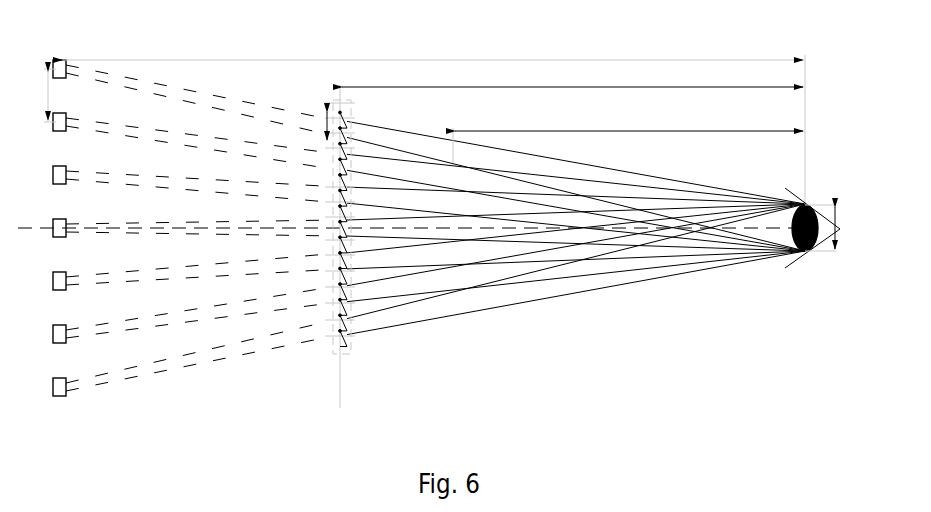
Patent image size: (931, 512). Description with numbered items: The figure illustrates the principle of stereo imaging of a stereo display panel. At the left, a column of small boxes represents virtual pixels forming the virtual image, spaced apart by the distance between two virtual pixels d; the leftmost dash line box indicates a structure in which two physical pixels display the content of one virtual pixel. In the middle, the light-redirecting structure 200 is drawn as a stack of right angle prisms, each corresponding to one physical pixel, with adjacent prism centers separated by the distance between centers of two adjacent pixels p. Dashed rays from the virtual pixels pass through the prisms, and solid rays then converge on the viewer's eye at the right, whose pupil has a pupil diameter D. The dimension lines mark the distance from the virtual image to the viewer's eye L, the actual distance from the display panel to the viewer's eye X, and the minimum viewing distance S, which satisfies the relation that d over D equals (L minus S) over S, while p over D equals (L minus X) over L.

The light-redirecting structure 200 is at (340, 355).
The distance from the virtual image to the viewer's eye L is at (432, 42).
The actual distance from the display panel to the viewer's eye X is at (572, 72).
The minimum viewing distance from the viewer's eye to the display panel S is at (628, 131).
The distance between two virtual pixels d is at (41, 95).
The distance between centers of two adjacent pixels p is at (316, 123).
The pupil diameter of the viewer's eye D is at (836, 228).